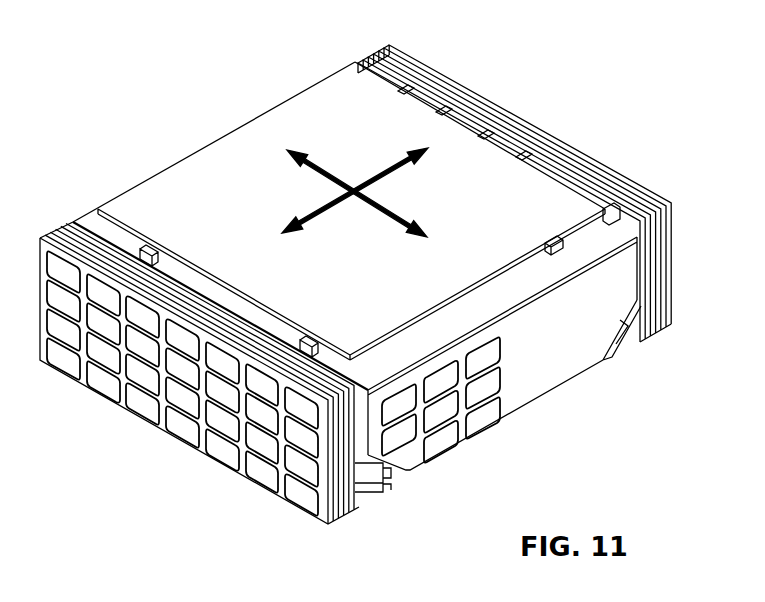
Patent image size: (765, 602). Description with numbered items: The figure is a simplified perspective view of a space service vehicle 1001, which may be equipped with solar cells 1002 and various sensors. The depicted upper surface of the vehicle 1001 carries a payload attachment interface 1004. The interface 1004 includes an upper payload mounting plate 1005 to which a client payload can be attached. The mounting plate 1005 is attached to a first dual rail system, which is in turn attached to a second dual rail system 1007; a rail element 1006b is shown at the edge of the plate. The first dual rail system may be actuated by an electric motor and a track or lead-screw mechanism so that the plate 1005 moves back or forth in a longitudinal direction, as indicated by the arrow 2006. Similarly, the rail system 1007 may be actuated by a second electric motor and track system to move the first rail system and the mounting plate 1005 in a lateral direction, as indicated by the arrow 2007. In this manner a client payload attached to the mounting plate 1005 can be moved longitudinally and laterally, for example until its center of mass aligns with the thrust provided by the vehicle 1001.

The space service vehicle 1001 is at (577, 358).
The solar cells 1002 is at (485, 408).
The payload attachment interface 1004 is at (246, 151).
The upper payload mounting plate 1005 is at (485, 182).
The locking tab 1006b is at (565, 240).
The second dual rail system 1007 is at (148, 244).
The arrow 2006 is at (325, 175).
The arrow 2007 is at (400, 163).